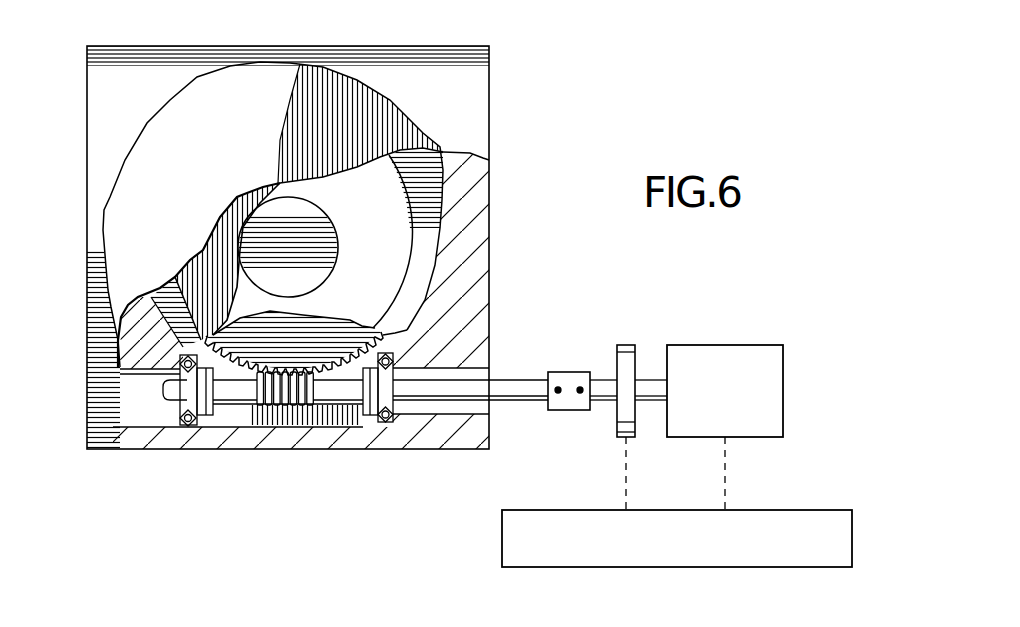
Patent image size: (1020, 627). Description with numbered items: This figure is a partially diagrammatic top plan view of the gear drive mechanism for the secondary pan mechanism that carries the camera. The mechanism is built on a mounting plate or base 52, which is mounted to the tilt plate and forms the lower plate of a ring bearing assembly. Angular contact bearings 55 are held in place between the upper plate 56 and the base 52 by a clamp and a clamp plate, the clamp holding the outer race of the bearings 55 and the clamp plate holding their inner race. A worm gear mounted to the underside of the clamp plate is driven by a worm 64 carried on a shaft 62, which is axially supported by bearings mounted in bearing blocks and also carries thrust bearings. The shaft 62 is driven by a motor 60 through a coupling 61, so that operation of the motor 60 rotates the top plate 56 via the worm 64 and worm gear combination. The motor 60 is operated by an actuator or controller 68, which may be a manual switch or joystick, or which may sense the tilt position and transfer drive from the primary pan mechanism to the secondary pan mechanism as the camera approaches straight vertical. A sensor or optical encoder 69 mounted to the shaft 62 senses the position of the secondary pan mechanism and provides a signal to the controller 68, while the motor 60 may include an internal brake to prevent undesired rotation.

The base plate 52 is at (467, 133).
The angular contact bearings 55 is at (423, 260).
The upper plate 56 is at (190, 150).
The motor 60 is at (735, 360).
The coupling 61 is at (567, 370).
The shaft 62 is at (526, 388).
The worm 64 is at (291, 408).
The actuator or controller 68 is at (793, 510).
The optical encoder 69 is at (623, 365).